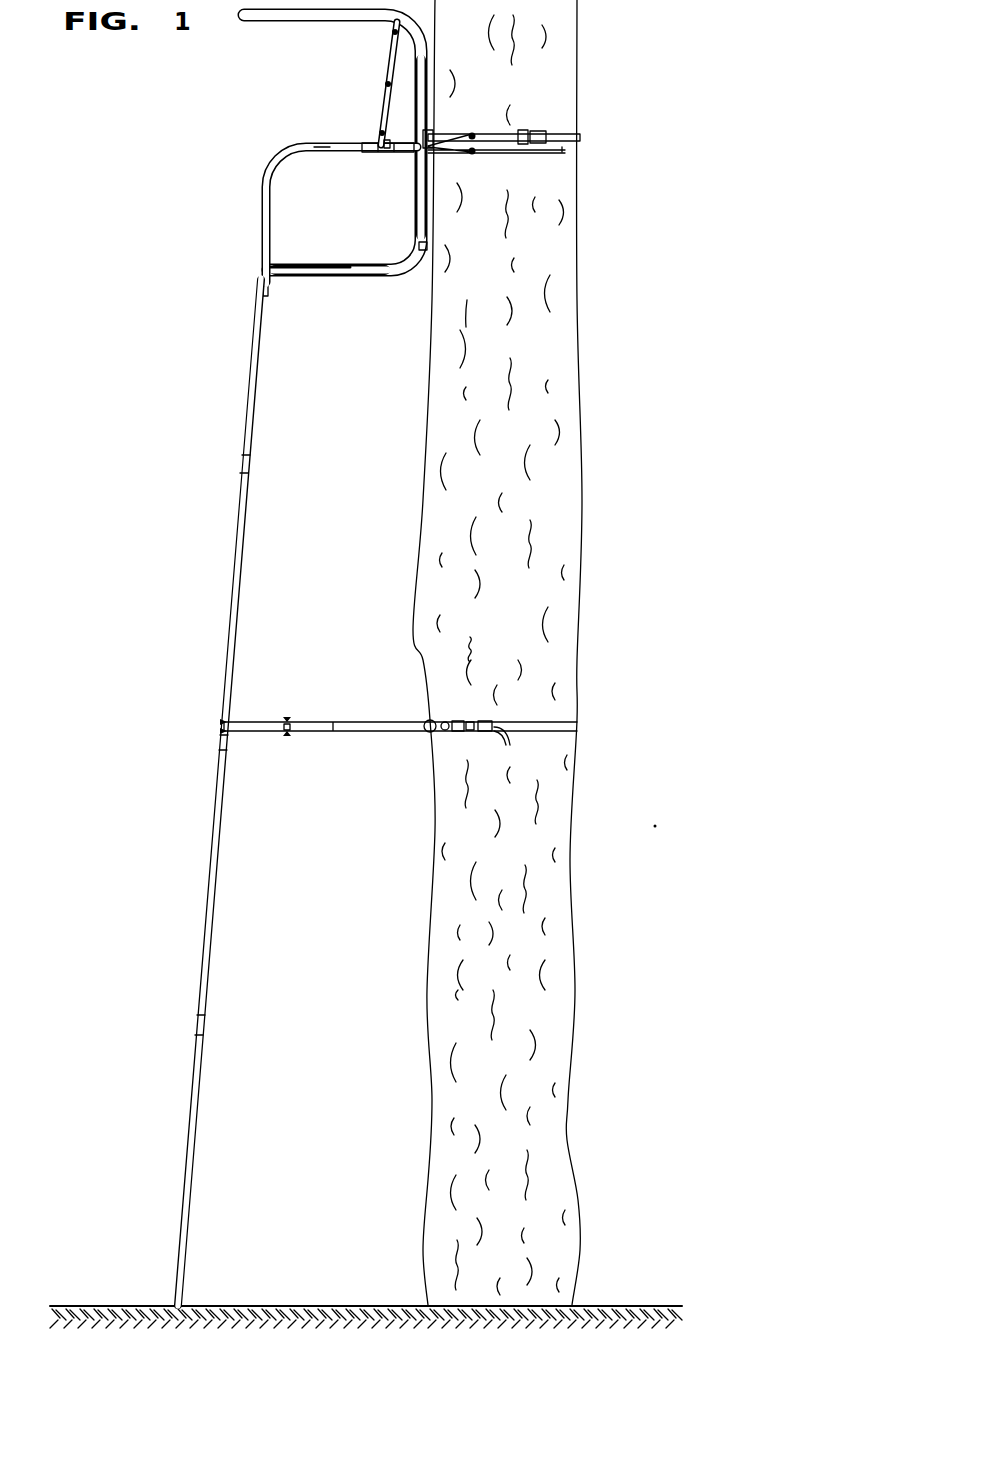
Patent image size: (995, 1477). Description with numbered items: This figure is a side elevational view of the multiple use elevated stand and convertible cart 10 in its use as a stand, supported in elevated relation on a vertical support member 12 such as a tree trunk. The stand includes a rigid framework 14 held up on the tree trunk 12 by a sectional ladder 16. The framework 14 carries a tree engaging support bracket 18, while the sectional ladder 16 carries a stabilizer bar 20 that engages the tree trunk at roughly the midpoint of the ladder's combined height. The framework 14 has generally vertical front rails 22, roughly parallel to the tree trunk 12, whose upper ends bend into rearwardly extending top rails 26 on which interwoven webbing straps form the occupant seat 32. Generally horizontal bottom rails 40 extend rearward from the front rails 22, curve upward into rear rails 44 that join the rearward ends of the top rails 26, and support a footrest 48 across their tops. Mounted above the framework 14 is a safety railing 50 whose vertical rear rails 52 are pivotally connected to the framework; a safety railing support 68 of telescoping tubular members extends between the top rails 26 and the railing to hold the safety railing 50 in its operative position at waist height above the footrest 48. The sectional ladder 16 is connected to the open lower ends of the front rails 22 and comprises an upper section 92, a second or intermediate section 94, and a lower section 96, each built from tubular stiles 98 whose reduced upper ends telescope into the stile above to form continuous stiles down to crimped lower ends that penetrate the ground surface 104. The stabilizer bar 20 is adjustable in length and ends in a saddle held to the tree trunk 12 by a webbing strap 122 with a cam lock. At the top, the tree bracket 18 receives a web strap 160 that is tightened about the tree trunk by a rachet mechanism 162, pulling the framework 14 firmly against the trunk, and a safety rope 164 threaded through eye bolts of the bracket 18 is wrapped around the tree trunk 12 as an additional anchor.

The multiple use elevated stand and convertible cart 10 is at (240, 330).
The vertical support member 12 is at (558, 356).
The rigid framework 14 is at (254, 226).
The sectional ladder 16 is at (201, 800).
The tree engaging support bracket 18 is at (444, 125).
The stabilizer bar 20 is at (350, 742).
The front rails 22 is at (261, 190).
The top rails 26 is at (318, 153).
The occupant seat 32 is at (362, 132).
The bottom rails 40 is at (322, 276).
The rear rails 44 is at (416, 181).
The footrest 48 is at (296, 267).
The safety railing 50 is at (275, 37).
The rear legs or rails 52 is at (415, 59).
The safety railing support 68 is at (370, 72).
The upper ladder section 92 is at (220, 583).
The second or intermediate ladder section 94 is at (194, 882).
The lower ladder section 96 is at (177, 1110).
The tubular stiles 98 is at (189, 1200).
The ground surface 104 is at (340, 1305).
The webbing strap 122 is at (544, 729).
The web strap 160 is at (575, 140).
The rachet mechanism 162 is at (526, 132).
The safety rope 164 is at (562, 152).